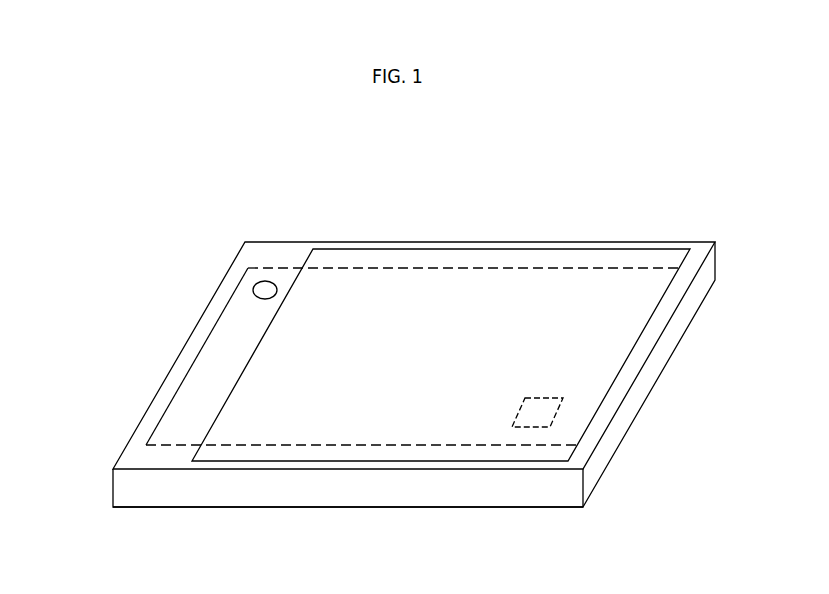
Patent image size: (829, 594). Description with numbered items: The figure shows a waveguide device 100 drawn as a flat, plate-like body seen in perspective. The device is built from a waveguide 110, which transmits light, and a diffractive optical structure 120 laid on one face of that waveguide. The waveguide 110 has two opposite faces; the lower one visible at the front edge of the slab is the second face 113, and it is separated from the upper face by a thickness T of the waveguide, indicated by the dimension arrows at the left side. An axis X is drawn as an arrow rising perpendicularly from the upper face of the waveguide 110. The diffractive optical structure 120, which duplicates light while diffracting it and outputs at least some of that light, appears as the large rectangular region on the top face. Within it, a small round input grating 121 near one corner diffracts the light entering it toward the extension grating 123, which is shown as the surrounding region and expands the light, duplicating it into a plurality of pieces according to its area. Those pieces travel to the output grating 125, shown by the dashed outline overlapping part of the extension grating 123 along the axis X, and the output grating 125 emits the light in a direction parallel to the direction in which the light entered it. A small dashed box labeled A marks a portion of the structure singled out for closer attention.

The waveguide device 100 is at (697, 188).
The waveguide 110 is at (325, 498).
The second face 113 is at (220, 509).
The diffractive optical structure 120 is at (613, 330).
The input grating 121 is at (257, 288).
The extension grating 123 is at (181, 401).
The output grating 125 is at (475, 259).
The enlarged region A is at (557, 413).
The thickness T is at (93, 445).
The axis X is at (403, 312).